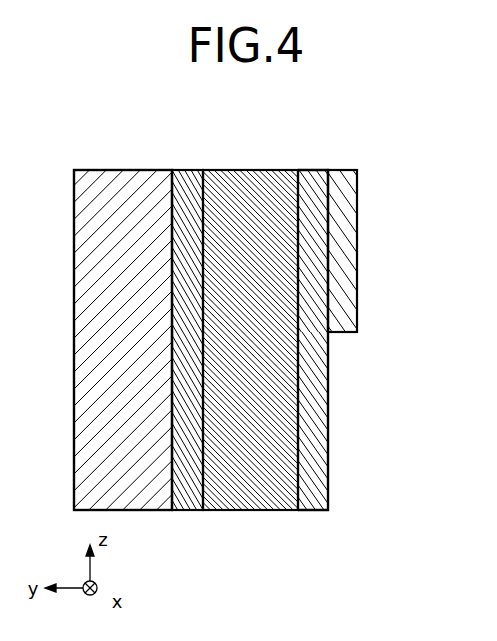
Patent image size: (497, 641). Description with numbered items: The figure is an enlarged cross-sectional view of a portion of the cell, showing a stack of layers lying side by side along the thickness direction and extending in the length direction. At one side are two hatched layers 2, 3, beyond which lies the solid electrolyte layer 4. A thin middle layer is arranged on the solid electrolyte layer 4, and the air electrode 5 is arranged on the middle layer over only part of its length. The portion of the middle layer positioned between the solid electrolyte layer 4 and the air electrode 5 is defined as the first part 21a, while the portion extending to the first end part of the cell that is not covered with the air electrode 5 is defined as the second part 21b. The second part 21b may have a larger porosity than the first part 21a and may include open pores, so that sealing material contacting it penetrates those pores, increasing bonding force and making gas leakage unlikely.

The substrate 2 is at (118, 197).
The intermediate layer 3 is at (188, 195).
The solid electrolyte layer 4 is at (248, 187).
The air electrode 5 is at (343, 240).
The first part 21a is at (317, 168).
The second part 21b is at (330, 463).